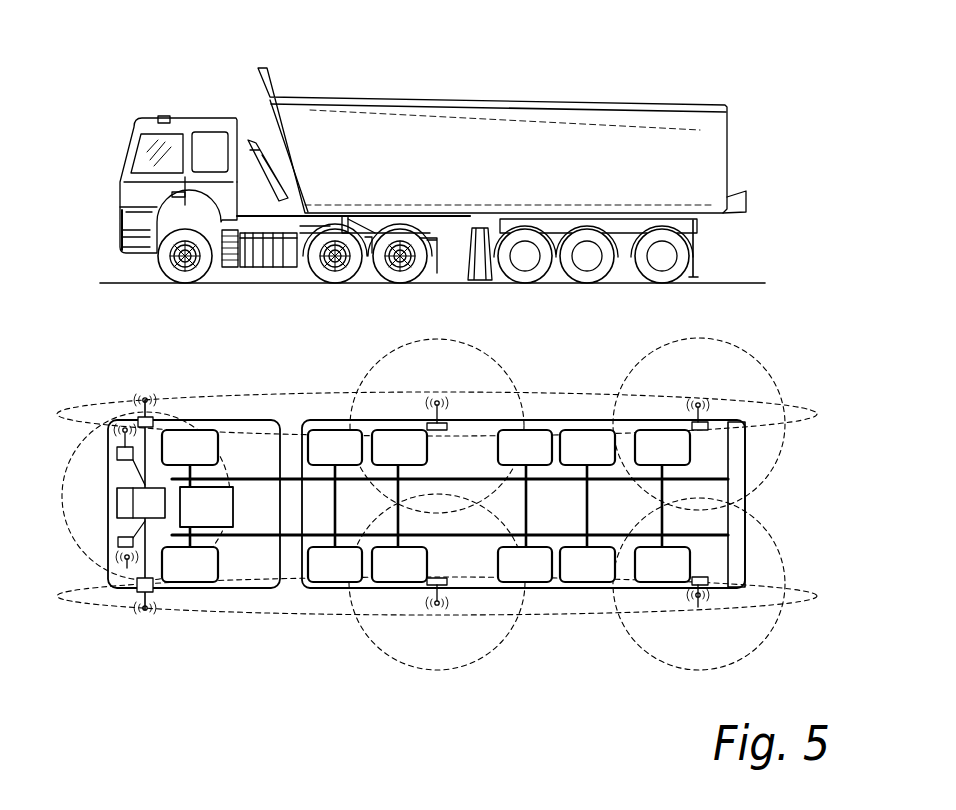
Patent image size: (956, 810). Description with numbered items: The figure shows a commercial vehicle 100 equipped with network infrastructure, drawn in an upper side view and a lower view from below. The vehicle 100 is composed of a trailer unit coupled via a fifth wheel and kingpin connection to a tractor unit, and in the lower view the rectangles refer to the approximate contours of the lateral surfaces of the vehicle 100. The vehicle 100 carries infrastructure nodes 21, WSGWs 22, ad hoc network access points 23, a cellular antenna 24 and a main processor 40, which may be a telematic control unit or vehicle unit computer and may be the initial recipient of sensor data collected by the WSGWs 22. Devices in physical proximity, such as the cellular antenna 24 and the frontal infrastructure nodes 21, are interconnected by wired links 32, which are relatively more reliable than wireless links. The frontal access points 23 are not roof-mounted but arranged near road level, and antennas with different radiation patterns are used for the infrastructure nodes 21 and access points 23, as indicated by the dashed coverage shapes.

The vehicle 100 is at (142, 38).
The infrastructure node 21 is at (137, 416).
The WSGW 22 is at (450, 426).
The ad hoc network access point 23 is at (118, 252).
The cellular antenna 24 is at (165, 114).
The wired link 32 is at (145, 478).
The main processor 40 is at (233, 503).